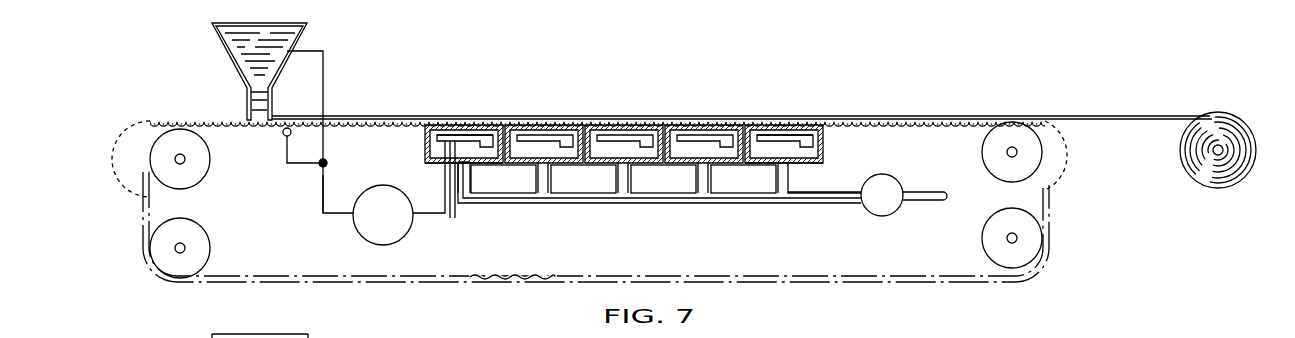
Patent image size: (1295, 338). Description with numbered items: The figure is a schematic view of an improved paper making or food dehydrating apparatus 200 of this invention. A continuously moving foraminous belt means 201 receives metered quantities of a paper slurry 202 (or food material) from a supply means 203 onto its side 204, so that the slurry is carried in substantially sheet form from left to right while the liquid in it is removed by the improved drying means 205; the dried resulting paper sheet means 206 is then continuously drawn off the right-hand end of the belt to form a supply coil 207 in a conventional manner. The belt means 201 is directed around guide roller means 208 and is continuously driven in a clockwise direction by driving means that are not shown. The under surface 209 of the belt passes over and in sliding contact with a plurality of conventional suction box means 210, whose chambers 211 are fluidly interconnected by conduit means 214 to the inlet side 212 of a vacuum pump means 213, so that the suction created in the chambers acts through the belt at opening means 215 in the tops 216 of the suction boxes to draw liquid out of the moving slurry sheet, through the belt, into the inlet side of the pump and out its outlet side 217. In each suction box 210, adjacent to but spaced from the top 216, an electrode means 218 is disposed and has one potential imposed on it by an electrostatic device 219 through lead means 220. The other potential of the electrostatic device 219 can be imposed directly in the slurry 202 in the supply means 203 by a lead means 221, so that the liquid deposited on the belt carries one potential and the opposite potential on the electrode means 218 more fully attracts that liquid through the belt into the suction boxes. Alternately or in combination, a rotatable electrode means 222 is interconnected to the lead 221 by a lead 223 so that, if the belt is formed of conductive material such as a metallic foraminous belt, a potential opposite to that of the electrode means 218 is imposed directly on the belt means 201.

The paper making apparatus 200 is at (987, 43).
The foraminous belt means 201 is at (218, 127).
The paper slurry 202 is at (250, 58).
The supply means 203 is at (306, 32).
The side 204 is at (167, 126).
The drying means 205 is at (825, 142).
The paper sheet means 206 is at (1078, 112).
The supply coil 207 is at (1180, 148).
The guide roller means 208 is at (190, 177).
The under surface 209 is at (393, 127).
The suction box means 210 is at (425, 142).
The chambers 211 is at (452, 206).
The inlet side 212 is at (858, 203).
The vacuum pump means 213 is at (885, 190).
The conduit means 214 is at (648, 203).
The opening means 215 is at (447, 124).
The tops 216 is at (462, 124).
The outlet side 217 is at (917, 201).
The electrode means 218 is at (473, 145).
The electrostatic device 219 is at (393, 228).
The lead means 220 is at (426, 216).
The lead means 221 is at (323, 195).
The rotatable electrode means 222 is at (283, 135).
The lead 223 is at (308, 167).